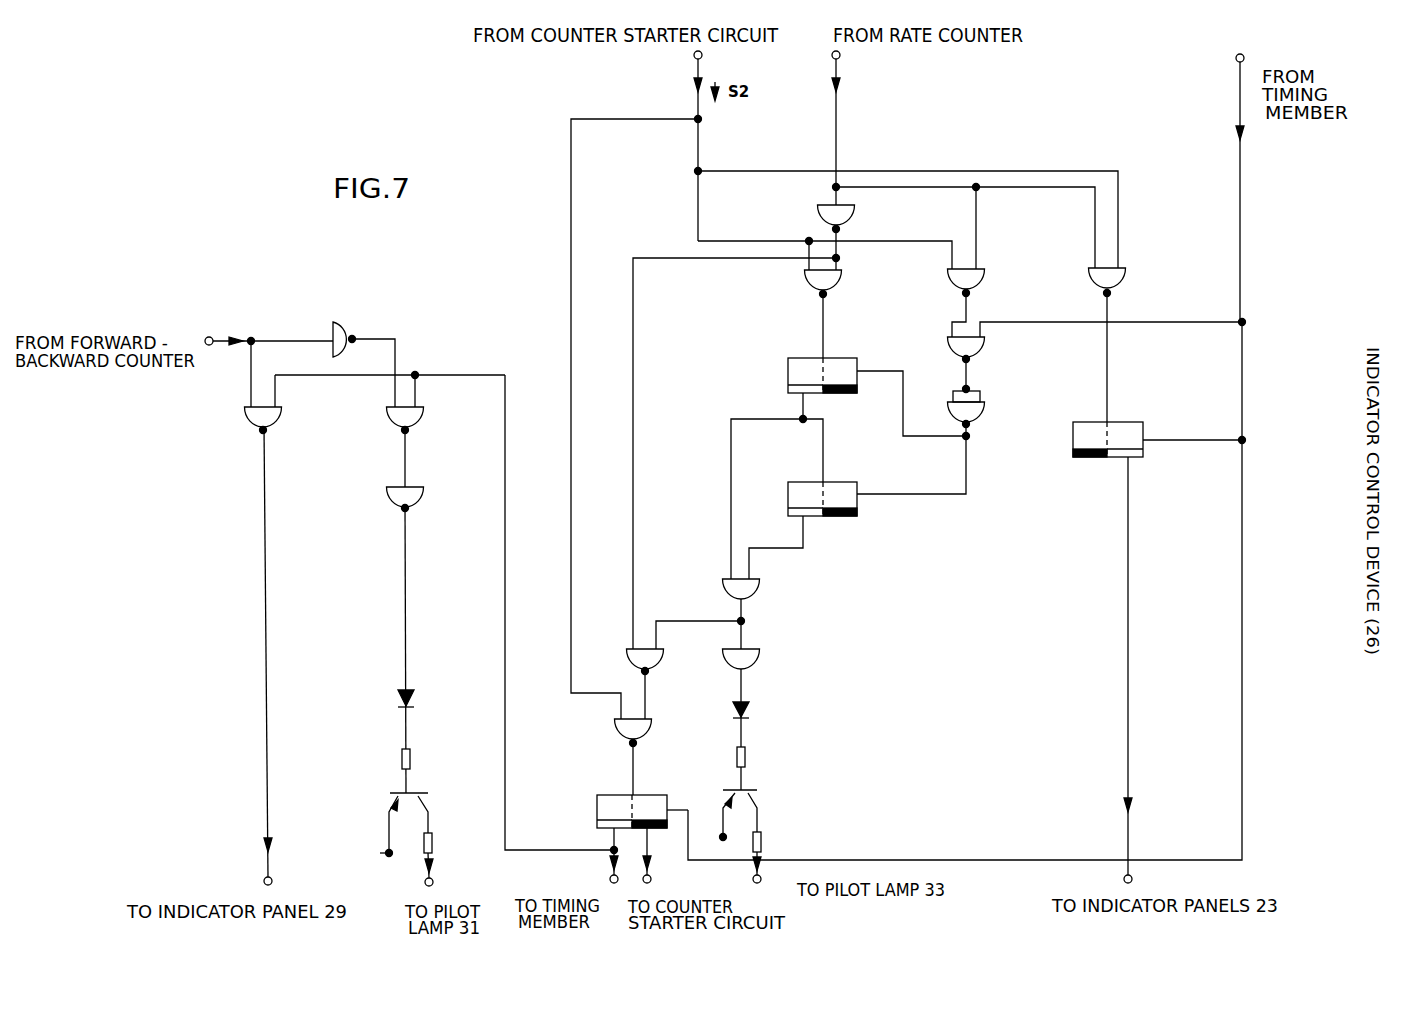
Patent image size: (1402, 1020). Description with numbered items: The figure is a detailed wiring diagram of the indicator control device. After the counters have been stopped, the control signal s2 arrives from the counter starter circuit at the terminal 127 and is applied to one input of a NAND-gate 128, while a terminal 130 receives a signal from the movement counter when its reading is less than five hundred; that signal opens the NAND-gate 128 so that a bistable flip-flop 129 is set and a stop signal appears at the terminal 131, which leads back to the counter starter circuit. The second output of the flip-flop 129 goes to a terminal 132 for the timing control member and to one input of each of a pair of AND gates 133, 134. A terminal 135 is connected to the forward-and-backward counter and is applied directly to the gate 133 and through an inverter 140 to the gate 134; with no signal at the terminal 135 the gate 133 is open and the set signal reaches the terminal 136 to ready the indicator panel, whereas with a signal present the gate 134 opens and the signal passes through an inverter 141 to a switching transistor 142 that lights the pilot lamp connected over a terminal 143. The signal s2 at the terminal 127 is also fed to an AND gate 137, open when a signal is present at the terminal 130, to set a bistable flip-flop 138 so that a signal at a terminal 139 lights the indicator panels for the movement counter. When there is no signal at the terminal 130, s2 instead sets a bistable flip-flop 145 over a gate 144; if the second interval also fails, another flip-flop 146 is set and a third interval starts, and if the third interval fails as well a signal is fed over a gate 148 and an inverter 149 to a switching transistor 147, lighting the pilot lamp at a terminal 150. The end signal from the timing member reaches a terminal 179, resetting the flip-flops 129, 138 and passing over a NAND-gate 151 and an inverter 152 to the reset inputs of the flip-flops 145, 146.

The terminal 127 is at (735, 143).
The terminal 130 is at (869, 125).
The terminal 179 is at (1001, 452).
The terminal 135 is at (263, 331).
The inverter 140 is at (340, 333).
The AND gate 133 is at (273, 416).
The AND gate 134 is at (413, 416).
The inverter 141 is at (415, 493).
The switching transistor 142 is at (415, 790).
The terminal 143 is at (443, 876).
The terminal 136 is at (299, 663).
The terminal 132 is at (581, 864).
The terminal 131 is at (675, 864).
The terminal 150 is at (771, 876).
The terminal 139 is at (1161, 847).
The NAND-gate 128 is at (620, 728).
The bistable flip-flop 129 is at (612, 806).
The switching transistor 147 is at (755, 785).
The gate 148 is at (752, 592).
The inverter 149 is at (752, 657).
The gate 144 is at (812, 283).
The bistable flip-flop 145 is at (845, 362).
The flip-flop 146 is at (842, 492).
The NAND-gate 151 is at (975, 347).
The inverter 152 is at (975, 413).
The AND gate 137 is at (1118, 281).
The bistable flip-flop 138 is at (1135, 434).